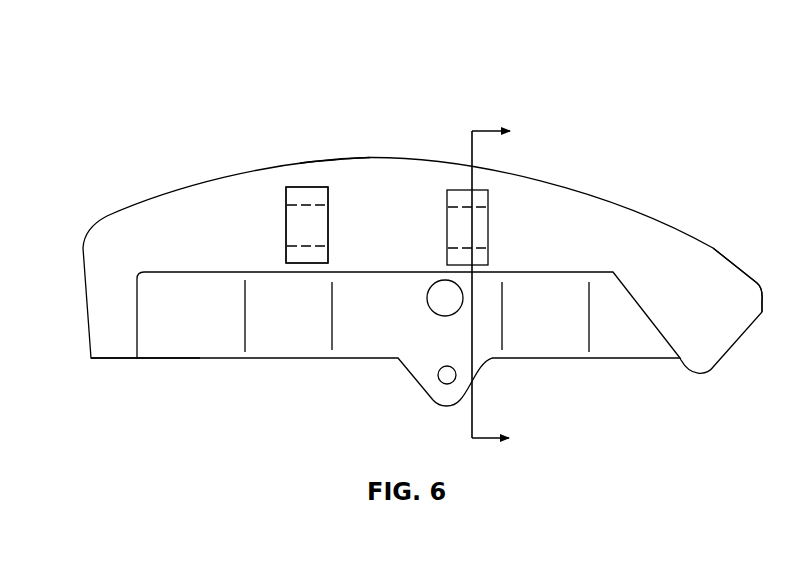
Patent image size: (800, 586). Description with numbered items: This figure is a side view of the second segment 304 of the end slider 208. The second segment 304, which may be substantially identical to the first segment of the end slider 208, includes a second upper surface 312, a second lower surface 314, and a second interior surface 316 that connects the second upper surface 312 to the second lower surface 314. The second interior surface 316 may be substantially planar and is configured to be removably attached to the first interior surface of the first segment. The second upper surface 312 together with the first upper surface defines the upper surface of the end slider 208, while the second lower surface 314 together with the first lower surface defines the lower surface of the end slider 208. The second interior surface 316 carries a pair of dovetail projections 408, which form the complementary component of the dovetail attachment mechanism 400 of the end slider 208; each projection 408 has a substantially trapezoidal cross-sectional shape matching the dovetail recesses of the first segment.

The end slider 208 is at (266, 54).
The second segment 304 is at (594, 193).
The second upper surface 312 is at (332, 160).
The second lower surface 314 is at (120, 360).
The second interior surface 316 is at (683, 248).
The dovetail attachment mechanism 400 is at (264, 208).
The dovetail projection 408 is at (318, 240).